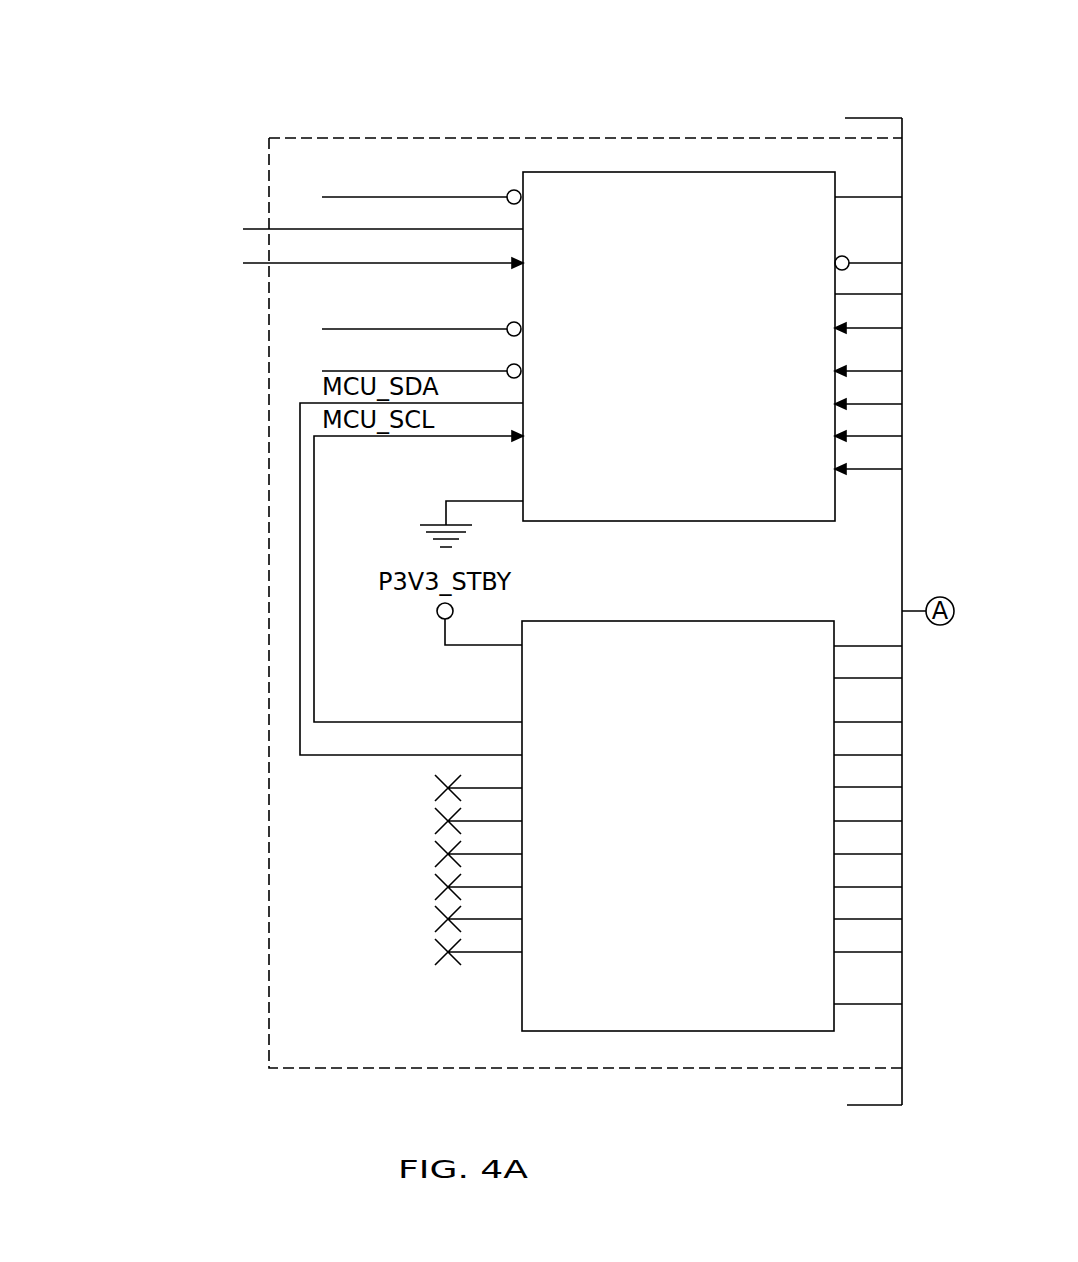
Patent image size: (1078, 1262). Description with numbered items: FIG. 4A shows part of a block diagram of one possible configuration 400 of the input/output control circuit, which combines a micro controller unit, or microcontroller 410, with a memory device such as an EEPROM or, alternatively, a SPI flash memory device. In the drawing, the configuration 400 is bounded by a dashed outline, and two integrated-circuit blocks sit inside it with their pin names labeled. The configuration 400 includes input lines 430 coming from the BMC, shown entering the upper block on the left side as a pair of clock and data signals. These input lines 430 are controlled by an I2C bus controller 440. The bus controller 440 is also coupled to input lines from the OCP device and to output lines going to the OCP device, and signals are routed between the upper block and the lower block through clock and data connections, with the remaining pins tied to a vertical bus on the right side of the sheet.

The configuration 400 is at (203, 60).
The microcontroller 410 is at (680, 172).
The input lines 430 is at (300, 265).
The I2C bus controller 440 is at (679, 1032).